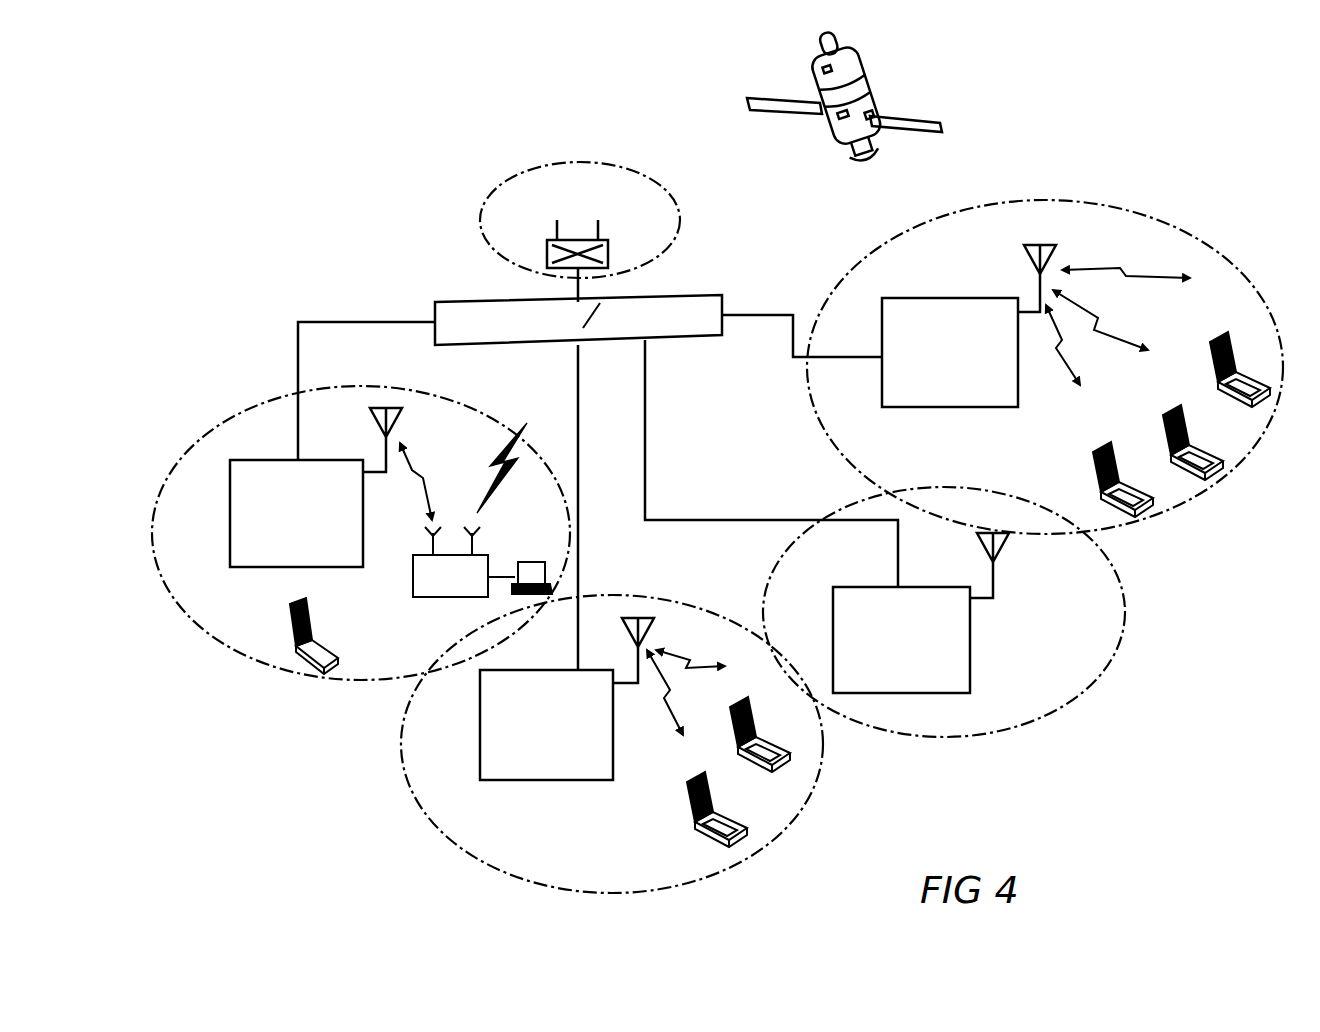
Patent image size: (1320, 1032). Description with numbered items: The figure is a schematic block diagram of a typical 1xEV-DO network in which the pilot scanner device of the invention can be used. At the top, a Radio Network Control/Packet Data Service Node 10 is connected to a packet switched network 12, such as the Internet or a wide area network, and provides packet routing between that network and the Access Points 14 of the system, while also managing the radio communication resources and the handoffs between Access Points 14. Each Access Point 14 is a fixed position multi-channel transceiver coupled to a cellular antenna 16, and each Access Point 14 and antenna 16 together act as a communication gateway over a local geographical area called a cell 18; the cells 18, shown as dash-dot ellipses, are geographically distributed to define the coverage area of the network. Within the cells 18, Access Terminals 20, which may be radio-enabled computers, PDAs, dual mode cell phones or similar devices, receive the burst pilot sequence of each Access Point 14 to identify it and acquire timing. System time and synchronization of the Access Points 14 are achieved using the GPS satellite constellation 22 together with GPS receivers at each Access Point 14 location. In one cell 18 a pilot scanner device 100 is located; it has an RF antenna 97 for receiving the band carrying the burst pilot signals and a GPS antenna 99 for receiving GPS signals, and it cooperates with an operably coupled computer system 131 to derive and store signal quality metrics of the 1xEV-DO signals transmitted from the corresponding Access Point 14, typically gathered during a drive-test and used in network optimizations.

The Radio Network Control/Packet Data Service Node 10 is at (700, 295).
The packet switched network 12 is at (480, 210).
The Access Point 14 is at (267, 460).
The cellular antenna 16 is at (405, 420).
The cell 18 is at (338, 387).
The Access Terminal 20 is at (318, 640).
The GPS satellite constellation 22 is at (882, 80).
The RF antenna 97 is at (425, 534).
The GPS antenna 99 is at (478, 534).
The pilot scanner device 100 is at (430, 598).
The computer system 131 is at (532, 562).